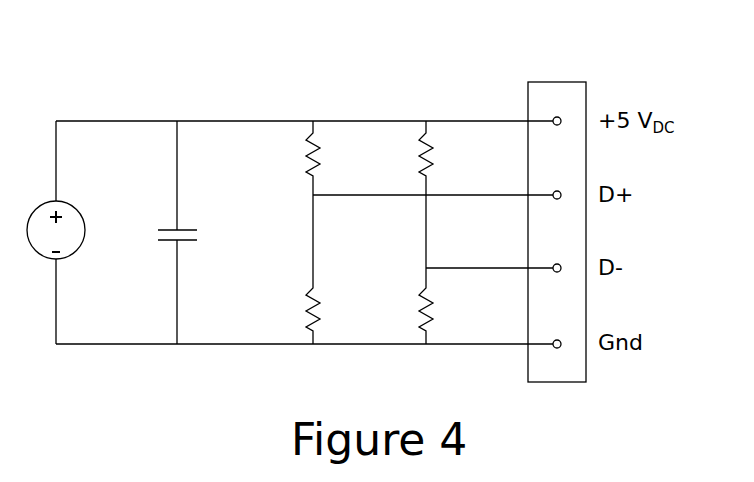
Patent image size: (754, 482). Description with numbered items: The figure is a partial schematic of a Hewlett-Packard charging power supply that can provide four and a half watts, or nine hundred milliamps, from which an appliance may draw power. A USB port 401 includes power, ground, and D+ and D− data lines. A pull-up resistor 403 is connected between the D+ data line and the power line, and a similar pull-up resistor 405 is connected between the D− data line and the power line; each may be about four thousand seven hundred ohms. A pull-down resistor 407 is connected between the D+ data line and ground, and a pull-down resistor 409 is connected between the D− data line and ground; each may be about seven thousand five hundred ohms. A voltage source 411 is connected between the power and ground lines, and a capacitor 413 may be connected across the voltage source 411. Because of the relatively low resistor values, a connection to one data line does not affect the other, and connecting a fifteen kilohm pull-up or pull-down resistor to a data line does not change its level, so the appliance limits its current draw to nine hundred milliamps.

The USB port 401 is at (565, 82).
The pull-up resistor 403 is at (321, 147).
The pull-up resistor 405 is at (434, 147).
The pull-down resistor 407 is at (321, 298).
The pull-down resistor 409 is at (434, 298).
The voltage source 411 is at (73, 208).
The capacitor 413 is at (186, 229).